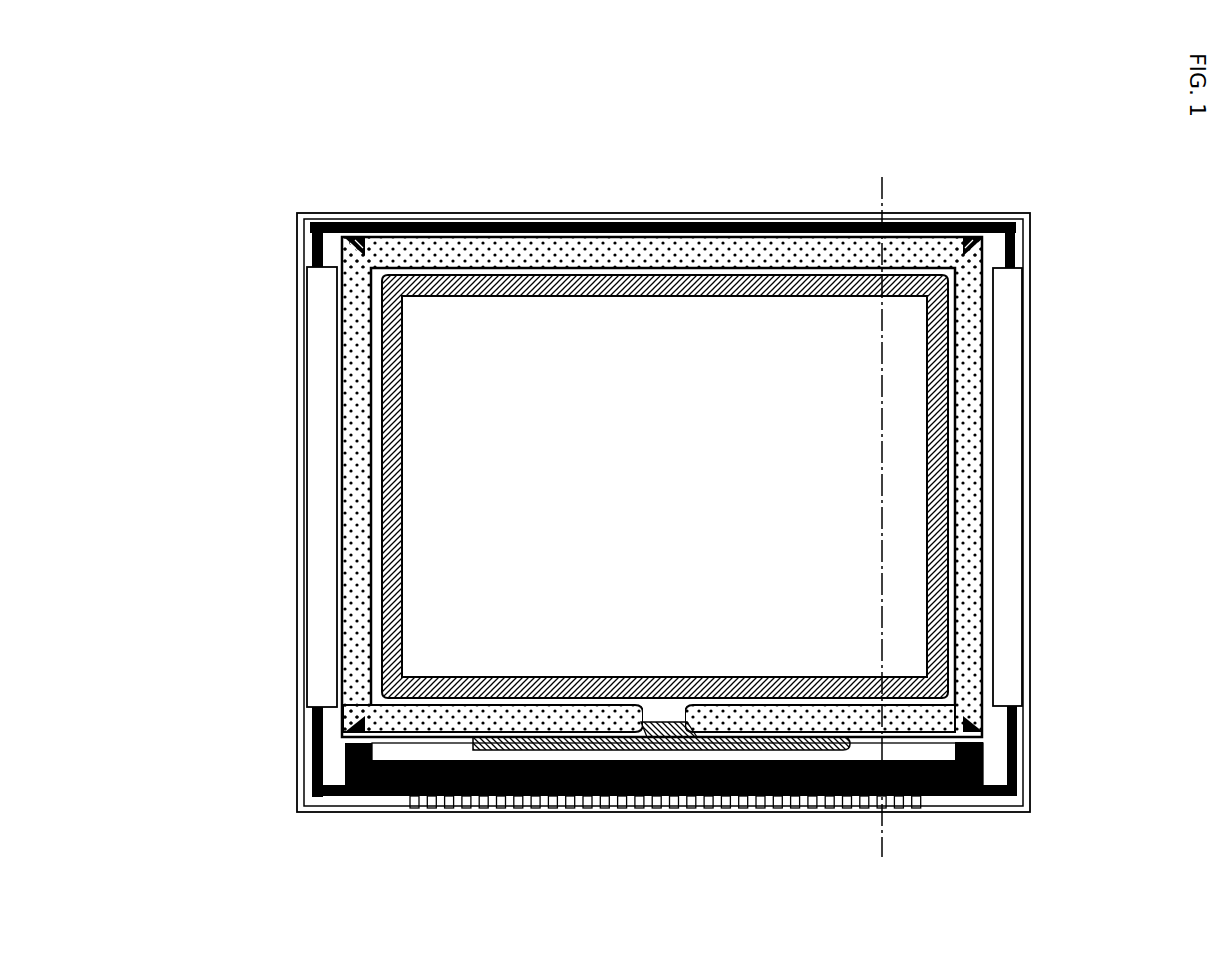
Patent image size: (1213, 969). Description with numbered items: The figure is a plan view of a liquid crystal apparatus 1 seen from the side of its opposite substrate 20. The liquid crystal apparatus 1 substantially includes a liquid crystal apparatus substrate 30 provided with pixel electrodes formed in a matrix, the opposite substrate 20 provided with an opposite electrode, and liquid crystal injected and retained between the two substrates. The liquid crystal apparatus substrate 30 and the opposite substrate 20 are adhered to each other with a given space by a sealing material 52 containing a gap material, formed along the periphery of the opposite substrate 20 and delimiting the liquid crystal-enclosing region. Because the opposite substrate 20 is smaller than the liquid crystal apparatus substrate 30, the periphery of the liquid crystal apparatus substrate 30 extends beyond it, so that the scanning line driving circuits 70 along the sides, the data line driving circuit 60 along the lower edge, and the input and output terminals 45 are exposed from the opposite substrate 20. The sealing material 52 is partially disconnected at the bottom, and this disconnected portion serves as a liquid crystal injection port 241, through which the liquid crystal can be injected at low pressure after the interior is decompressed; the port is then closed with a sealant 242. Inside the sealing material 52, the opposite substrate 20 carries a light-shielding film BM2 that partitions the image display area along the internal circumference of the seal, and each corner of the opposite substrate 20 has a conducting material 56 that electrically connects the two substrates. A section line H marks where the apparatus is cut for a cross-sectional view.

The liquid crystal apparatus 1 is at (983, 200).
The opposite substrate 20 is at (641, 213).
The liquid crystal apparatus substrate 30 is at (400, 200).
The input and output terminals 45 is at (920, 818).
The sealing material 52 is at (378, 447).
The conducting material 56 is at (353, 243).
The data line driving circuit 60 is at (940, 760).
The scanning line driving circuits 70 is at (313, 547).
The liquid crystal injection port 241 is at (652, 705).
The sealant 242 is at (678, 713).
The light-shielding film BM2 is at (415, 368).
The section line H- H is at (882, 516).